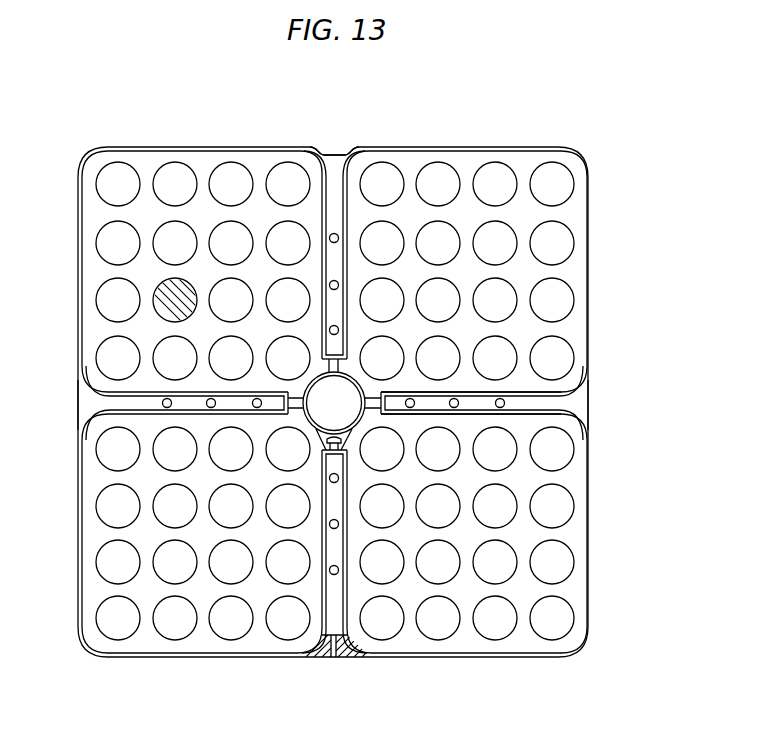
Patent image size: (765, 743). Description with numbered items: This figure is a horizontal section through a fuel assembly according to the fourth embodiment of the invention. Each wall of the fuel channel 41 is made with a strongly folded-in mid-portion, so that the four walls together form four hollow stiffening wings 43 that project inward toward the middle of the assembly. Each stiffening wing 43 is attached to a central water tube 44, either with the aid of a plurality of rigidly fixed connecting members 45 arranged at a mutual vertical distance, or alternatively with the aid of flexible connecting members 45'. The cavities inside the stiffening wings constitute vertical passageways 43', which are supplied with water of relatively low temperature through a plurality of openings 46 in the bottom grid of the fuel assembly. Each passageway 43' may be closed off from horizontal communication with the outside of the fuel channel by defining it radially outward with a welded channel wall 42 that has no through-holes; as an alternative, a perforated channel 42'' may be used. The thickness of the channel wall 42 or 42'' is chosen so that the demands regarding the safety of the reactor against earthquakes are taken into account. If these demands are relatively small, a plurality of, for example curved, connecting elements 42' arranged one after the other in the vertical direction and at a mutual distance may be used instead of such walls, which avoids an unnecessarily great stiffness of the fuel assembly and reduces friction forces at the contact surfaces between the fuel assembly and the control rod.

The fuel channel 41 is at (590, 268).
The welded channel wall 42 is at (332, 402).
The connecting elements 42' is at (317, 133).
The perforated channel 42'' is at (327, 662).
The hollow stiffening wings 43 is at (360, 402).
The vertical passageways 43' is at (509, 377).
The central water tube 44 is at (334, 403).
The rigidly fixed connecting members 45 is at (312, 425).
The flexible connecting members 45' is at (370, 461).
The openings 46 is at (324, 572).